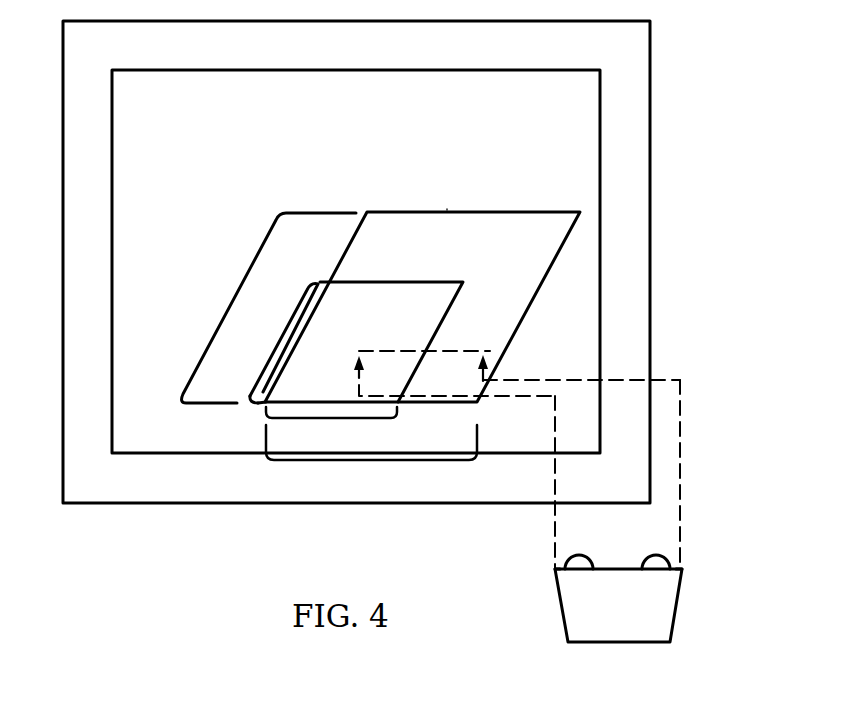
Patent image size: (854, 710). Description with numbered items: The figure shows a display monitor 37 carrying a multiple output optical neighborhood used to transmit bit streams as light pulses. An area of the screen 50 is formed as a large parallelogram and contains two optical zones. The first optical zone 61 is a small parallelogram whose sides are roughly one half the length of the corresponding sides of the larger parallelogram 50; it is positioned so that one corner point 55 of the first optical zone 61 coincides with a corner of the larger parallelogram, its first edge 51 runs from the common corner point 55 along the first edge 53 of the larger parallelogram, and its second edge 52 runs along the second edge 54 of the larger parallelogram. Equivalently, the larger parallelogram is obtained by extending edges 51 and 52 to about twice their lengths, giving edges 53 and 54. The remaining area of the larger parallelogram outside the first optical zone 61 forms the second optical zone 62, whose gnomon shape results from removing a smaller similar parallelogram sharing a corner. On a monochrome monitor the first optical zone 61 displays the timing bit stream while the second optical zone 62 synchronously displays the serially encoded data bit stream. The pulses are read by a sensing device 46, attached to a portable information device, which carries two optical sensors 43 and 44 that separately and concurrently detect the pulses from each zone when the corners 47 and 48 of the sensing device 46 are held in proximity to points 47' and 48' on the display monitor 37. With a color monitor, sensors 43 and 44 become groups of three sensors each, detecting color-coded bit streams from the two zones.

The display monitor 37 is at (650, 247).
The screen area (OZMON) 50 is at (447, 210).
The second edge of larger parallelogram 54 is at (229, 307).
The second optical zone 62 is at (526, 232).
The first optical zone 61 is at (388, 292).
The second edge of first optical zone parallelogram 52 is at (285, 332).
The corner point 55 is at (262, 403).
The first edge of first optical zone parallelogram 51 is at (330, 419).
The first edge of larger parallelogram 53 is at (378, 460).
The point on display monitor 47' is at (441, 354).
The point on display monitor 48' is at (570, 345).
The sensing device 46 is at (679, 604).
The first optical sensor 43 is at (579, 570).
The second optical sensor 44 is at (654, 571).
The corner of sensing device 47 is at (523, 570).
The corner of sensing device 48 is at (711, 572).